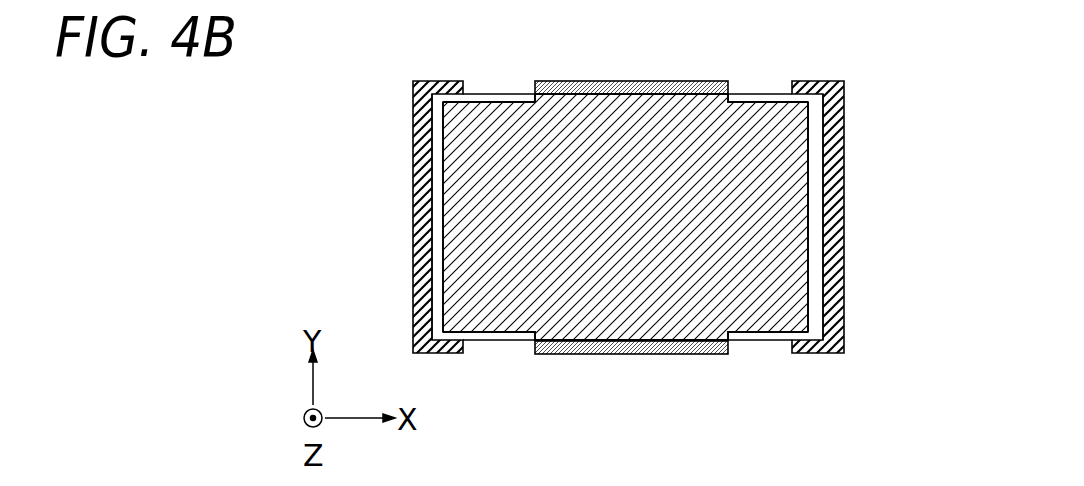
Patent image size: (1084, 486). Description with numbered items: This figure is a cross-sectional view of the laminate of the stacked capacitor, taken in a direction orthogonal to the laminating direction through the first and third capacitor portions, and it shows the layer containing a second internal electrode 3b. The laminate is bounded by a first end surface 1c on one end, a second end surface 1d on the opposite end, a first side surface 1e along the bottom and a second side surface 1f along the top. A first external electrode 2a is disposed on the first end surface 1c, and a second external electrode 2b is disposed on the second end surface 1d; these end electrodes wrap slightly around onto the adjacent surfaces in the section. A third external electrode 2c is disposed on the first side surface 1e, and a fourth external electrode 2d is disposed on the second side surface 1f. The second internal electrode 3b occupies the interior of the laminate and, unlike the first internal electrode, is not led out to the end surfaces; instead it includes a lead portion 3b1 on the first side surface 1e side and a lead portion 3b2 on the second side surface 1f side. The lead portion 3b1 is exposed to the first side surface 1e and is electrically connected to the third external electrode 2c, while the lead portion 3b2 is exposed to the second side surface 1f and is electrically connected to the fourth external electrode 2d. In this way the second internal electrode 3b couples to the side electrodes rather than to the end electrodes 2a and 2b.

The first end surface 1c is at (444, 268).
The second end surface 1d is at (823, 257).
The first side surface 1e is at (502, 341).
The second side surface 1f is at (746, 94).
The first external electrode 2a is at (420, 172).
The second external electrode 2b is at (844, 190).
The third external electrode 2c is at (670, 355).
The fourth external electrode 2d is at (630, 81).
The second internal electrode 3b is at (823, 305).
The lead portion 3b1 is at (728, 355).
The lead portion 3b2 is at (541, 96).